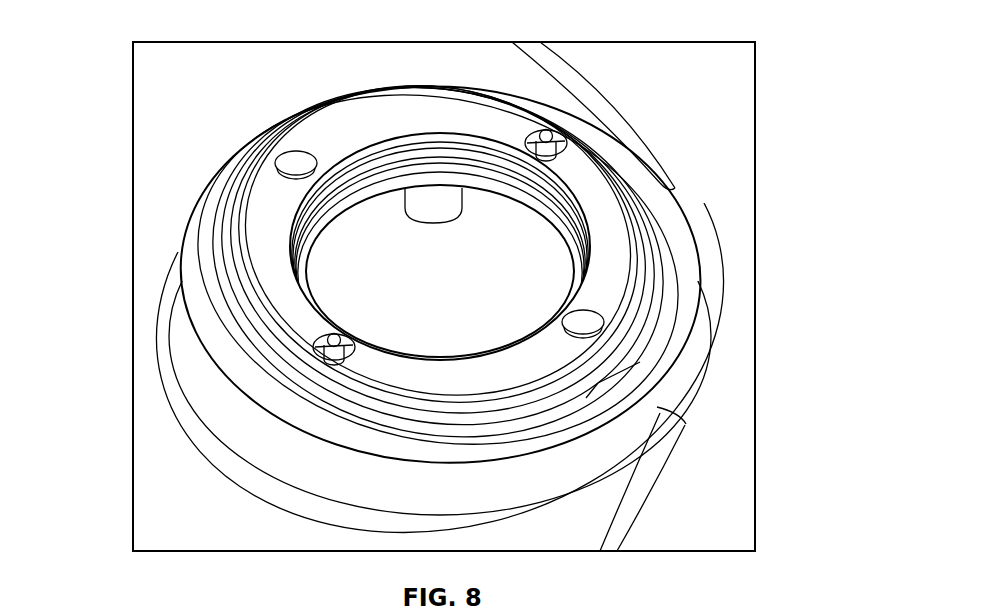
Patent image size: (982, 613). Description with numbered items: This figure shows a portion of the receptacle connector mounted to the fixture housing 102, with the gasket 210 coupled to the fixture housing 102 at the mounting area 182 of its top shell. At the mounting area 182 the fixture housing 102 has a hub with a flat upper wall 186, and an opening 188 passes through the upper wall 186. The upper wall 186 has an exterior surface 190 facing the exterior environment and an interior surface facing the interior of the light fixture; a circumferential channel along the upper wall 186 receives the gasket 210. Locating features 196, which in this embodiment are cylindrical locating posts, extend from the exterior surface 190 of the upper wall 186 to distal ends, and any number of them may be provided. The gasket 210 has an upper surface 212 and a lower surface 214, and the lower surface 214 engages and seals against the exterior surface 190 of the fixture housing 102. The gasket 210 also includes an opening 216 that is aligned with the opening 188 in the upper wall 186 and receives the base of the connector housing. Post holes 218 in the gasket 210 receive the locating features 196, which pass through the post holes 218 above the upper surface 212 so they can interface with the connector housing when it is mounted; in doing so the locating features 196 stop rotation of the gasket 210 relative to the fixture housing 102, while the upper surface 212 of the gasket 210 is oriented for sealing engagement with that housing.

The fixture housing 102 is at (717, 461).
The mounting area 182 is at (673, 230).
The upper wall 186 is at (652, 332).
The opening 188 is at (525, 230).
The exterior surface 190 is at (603, 380).
The locating features 196 is at (546, 128).
The gasket 210 is at (412, 115).
The upper surface 212 is at (262, 282).
The lower surface 214 is at (250, 336).
The opening 216 is at (308, 226).
The post holes 218 is at (568, 131).